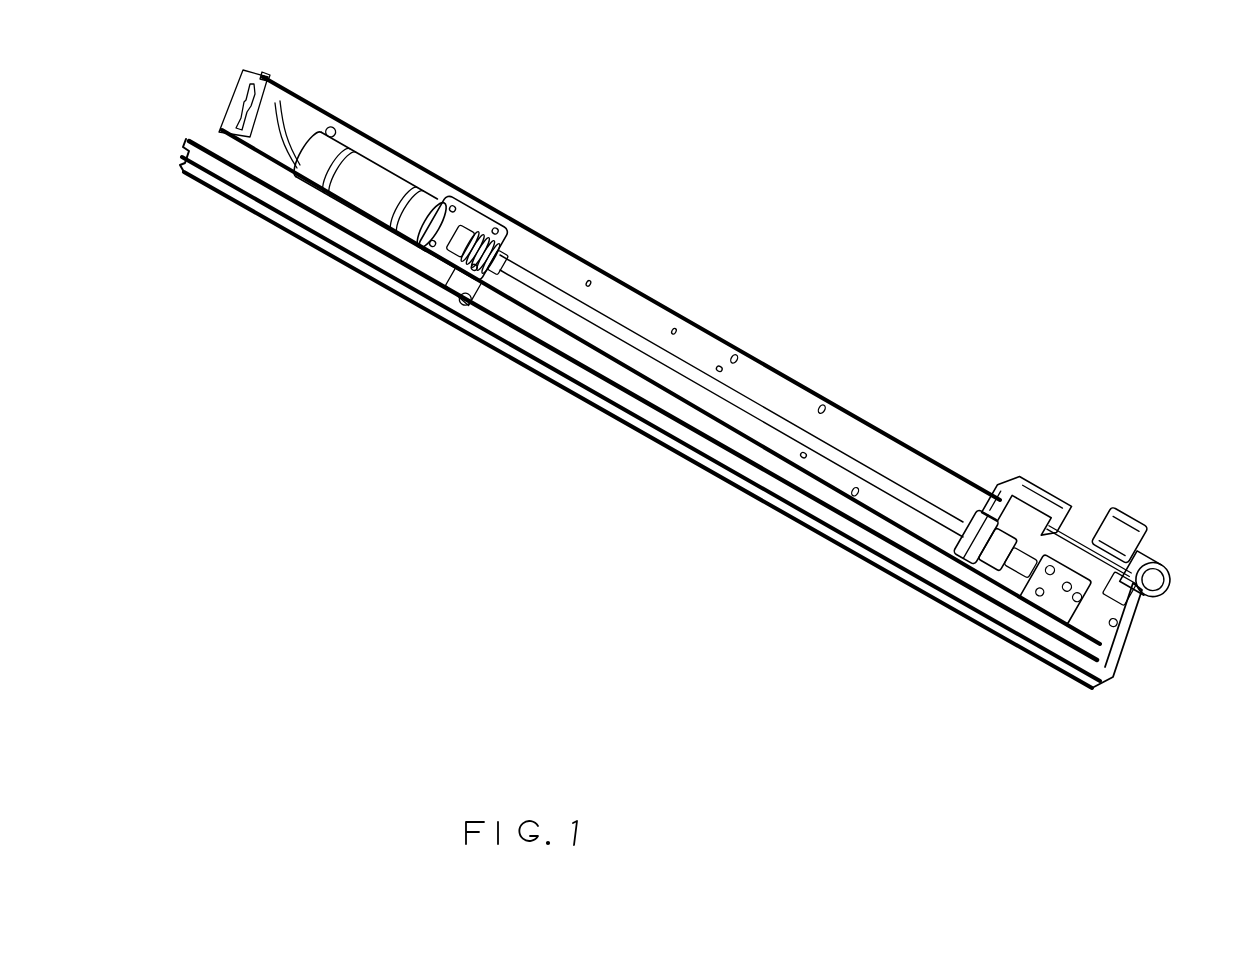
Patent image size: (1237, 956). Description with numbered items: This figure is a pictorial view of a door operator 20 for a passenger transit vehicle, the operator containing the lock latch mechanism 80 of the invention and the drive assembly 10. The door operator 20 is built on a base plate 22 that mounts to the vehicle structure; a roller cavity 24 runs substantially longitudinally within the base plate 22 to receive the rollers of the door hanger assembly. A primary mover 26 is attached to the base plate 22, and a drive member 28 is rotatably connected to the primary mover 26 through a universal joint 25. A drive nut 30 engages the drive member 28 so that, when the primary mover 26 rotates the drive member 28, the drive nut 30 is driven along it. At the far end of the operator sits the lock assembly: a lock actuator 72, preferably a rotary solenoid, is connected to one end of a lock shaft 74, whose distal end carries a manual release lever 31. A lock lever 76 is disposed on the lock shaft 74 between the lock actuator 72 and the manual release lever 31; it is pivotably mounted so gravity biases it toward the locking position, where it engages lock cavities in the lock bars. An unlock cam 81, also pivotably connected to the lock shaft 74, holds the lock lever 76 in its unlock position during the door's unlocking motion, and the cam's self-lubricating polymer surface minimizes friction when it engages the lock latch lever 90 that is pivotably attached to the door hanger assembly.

The drive assembly 10 is at (1138, 338).
The door operator 20 is at (675, 86).
The base plate 22 is at (590, 267).
The roller cavity 24 is at (625, 400).
The universal joint 25 is at (500, 222).
The primary mover 26 is at (390, 168).
The drive member 28 is at (935, 474).
The drive nut 30 is at (975, 550).
The manual release lever 31 is at (1022, 492).
The lock actuator 72 is at (1143, 553).
The lock shaft 74 is at (1080, 547).
The lock lever 76 is at (1117, 607).
The lock latch mechanism 80 is at (1112, 438).
The unlock cam 81 is at (1053, 480).
The lock latch lever 90 is at (983, 641).